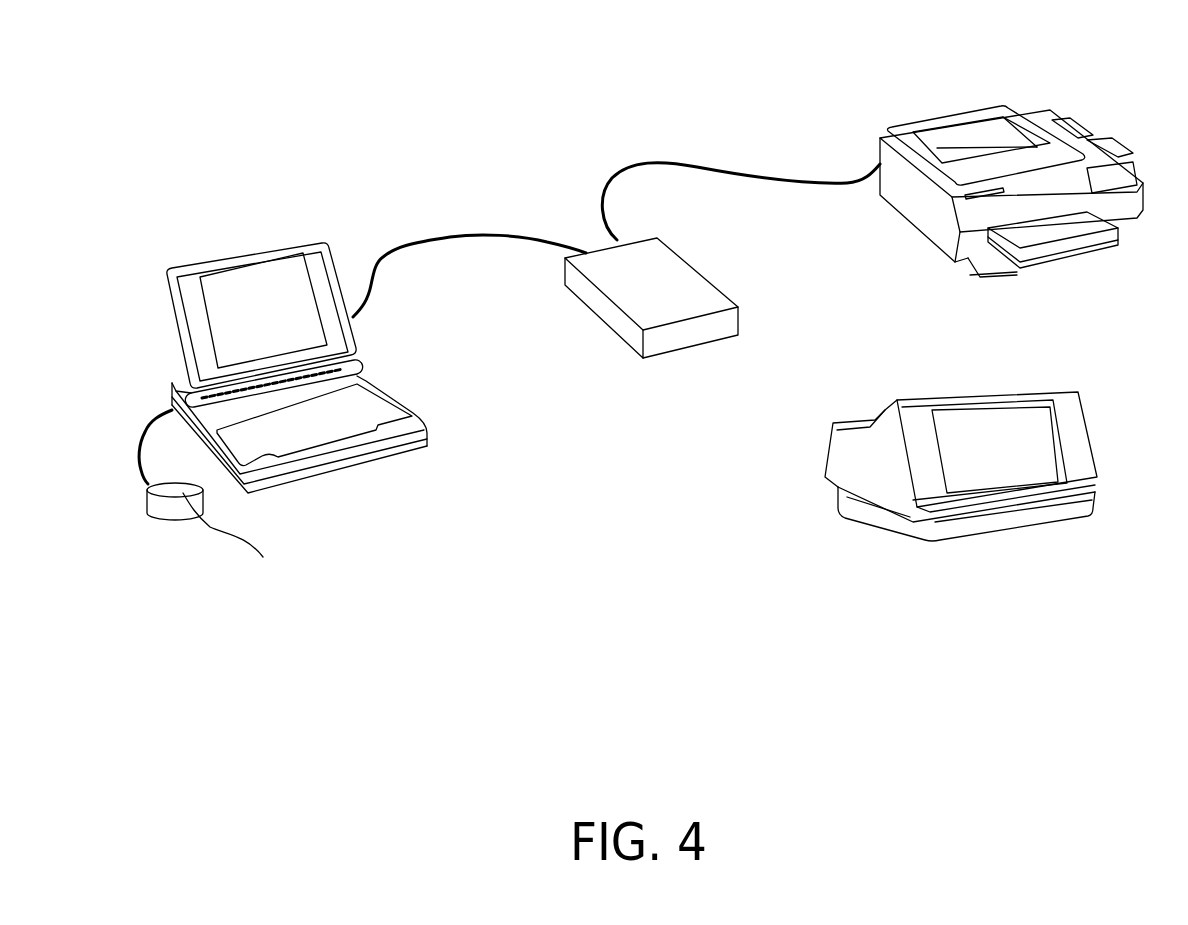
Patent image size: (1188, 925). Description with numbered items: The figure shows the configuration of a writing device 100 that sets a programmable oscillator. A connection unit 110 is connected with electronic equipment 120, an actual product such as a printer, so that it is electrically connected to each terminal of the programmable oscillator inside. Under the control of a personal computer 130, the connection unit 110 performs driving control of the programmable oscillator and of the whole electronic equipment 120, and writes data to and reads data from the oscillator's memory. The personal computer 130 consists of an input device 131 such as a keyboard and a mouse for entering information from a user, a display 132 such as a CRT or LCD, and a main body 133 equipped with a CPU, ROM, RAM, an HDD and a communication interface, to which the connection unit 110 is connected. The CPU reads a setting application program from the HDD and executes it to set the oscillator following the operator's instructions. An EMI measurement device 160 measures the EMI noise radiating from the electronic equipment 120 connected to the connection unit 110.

The writing device 100 is at (450, 98).
The connection unit 110 is at (700, 272).
The electronic equipment 120 is at (1013, 107).
The personal computer 130 is at (252, 246).
The input device 131 is at (253, 450).
The display 132 is at (173, 312).
The main body 133 is at (363, 380).
The EMI measurement device 160 is at (1000, 398).